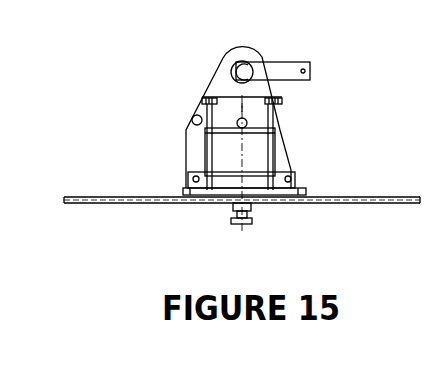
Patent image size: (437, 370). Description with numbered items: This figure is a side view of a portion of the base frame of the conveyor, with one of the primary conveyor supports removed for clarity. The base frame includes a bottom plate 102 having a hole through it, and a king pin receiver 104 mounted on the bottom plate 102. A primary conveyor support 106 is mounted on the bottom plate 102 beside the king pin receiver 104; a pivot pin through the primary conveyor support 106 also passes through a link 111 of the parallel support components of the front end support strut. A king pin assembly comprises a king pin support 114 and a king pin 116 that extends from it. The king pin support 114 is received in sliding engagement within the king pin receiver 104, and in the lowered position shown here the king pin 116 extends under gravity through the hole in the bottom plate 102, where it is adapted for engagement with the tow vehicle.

The bottom plate 102 is at (346, 196).
The king pin receiver 104 is at (277, 154).
The primary conveyor support 106 is at (217, 72).
The link 111 is at (287, 62).
The king pin support 114 is at (228, 160).
The king pin 116 is at (254, 215).